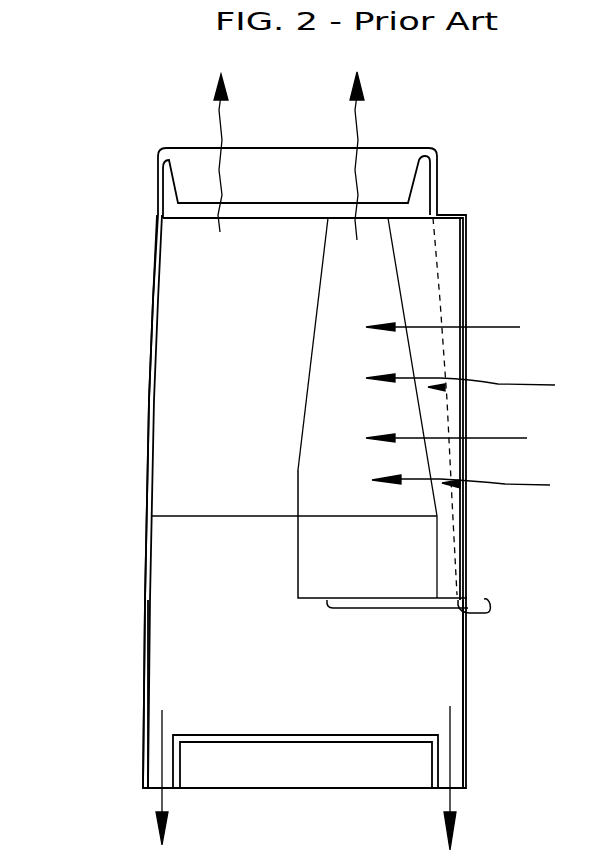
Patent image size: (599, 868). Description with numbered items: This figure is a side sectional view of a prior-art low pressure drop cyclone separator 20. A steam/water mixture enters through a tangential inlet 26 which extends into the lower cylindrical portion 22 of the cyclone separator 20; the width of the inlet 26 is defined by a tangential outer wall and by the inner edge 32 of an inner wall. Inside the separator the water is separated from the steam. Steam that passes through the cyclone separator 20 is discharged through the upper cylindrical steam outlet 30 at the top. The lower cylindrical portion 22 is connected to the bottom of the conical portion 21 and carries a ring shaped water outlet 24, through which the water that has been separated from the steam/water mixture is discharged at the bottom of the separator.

The cyclone separator 20 is at (100, 208).
The conical portion 21 is at (147, 402).
The lower cylindrical portion 22 is at (140, 660).
The ring shaped water outlet 24 is at (470, 712).
The tangential inlet 26 is at (462, 245).
The upper cylindrical steam outlet 30 is at (366, 162).
The inner edge 32 is at (405, 363).